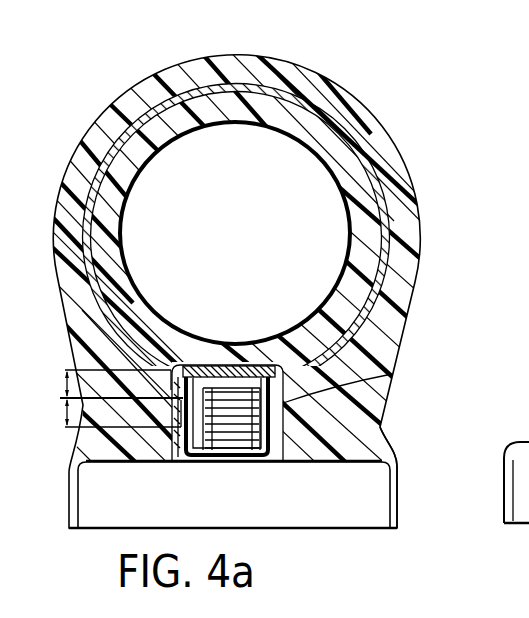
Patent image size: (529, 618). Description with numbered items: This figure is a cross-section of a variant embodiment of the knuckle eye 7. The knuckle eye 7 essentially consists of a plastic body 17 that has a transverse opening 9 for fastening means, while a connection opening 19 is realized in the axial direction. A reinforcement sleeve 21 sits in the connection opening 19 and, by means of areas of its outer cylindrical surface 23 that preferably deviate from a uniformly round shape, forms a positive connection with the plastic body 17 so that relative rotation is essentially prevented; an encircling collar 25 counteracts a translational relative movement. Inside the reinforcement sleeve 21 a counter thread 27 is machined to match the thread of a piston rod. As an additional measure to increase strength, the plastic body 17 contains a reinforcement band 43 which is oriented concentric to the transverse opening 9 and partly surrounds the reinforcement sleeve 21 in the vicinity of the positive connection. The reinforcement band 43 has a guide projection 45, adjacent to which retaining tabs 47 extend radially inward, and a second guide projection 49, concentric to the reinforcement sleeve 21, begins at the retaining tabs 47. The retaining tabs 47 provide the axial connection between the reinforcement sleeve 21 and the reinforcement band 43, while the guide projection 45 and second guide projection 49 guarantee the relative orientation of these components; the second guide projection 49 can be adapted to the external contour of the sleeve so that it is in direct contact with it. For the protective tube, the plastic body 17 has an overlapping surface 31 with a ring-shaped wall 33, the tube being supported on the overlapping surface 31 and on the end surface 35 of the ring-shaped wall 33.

The knuckle eye 7 is at (362, 72).
The transverse opening 9 is at (311, 178).
The reinforcement band 43 is at (376, 171).
The plastic body 17 is at (378, 346).
The reinforcement sleeve 21 is at (392, 375).
The encircling collar 25 is at (269, 366).
The outer cylindrical surface 23 is at (141, 463).
The connection opening 19 is at (248, 462).
The counter thread 27 is at (218, 462).
The retaining tabs 47 is at (128, 462).
The guide projection 45 is at (66, 384).
The second guide projection 49 is at (66, 412).
The overlapping surface 31 is at (384, 443).
The ring-shaped wall 33 is at (398, 493).
The end surface 35 is at (391, 530).